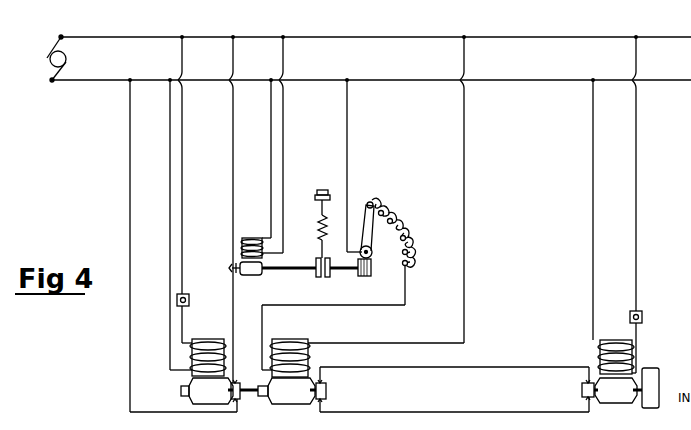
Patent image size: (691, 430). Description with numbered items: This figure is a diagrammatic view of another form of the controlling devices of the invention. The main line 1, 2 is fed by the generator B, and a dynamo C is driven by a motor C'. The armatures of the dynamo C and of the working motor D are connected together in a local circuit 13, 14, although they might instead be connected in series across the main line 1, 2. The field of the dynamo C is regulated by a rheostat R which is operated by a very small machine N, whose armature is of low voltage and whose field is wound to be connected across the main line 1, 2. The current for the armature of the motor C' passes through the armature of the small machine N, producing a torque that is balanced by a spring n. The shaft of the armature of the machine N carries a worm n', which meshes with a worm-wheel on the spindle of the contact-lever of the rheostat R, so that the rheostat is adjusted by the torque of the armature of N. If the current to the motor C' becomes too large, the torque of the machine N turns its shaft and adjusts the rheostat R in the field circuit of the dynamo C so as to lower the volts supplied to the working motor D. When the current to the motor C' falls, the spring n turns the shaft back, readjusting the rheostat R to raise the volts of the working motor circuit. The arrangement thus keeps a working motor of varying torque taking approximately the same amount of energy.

The main line 1 is at (371, 71).
The main line 2 is at (376, 26).
The local circuit 13 is at (454, 365).
The local circuit 14 is at (454, 405).
The generator B is at (42, 58).
The dynamo C is at (292, 384).
The motor C' is at (210, 384).
The working motor D is at (627, 374).
The small machine N is at (246, 266).
The spring n is at (328, 224).
The worm n' is at (367, 276).
The rheostat R is at (388, 240).